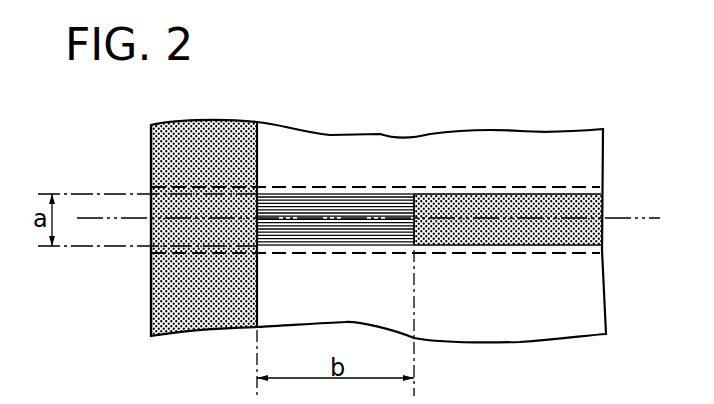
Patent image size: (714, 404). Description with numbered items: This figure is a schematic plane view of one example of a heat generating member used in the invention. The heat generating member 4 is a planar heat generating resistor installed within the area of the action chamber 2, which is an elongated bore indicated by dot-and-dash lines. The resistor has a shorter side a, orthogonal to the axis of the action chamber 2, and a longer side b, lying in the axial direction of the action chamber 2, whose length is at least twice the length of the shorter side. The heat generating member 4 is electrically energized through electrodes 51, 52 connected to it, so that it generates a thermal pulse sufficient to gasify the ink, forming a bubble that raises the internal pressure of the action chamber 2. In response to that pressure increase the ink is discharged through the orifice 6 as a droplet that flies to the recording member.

The action chamber 2 is at (490, 187).
The heat generating member 4 is at (308, 197).
The orifice 6 is at (150, 210).
The electrode 51 is at (193, 318).
The electrode 52 is at (510, 236).